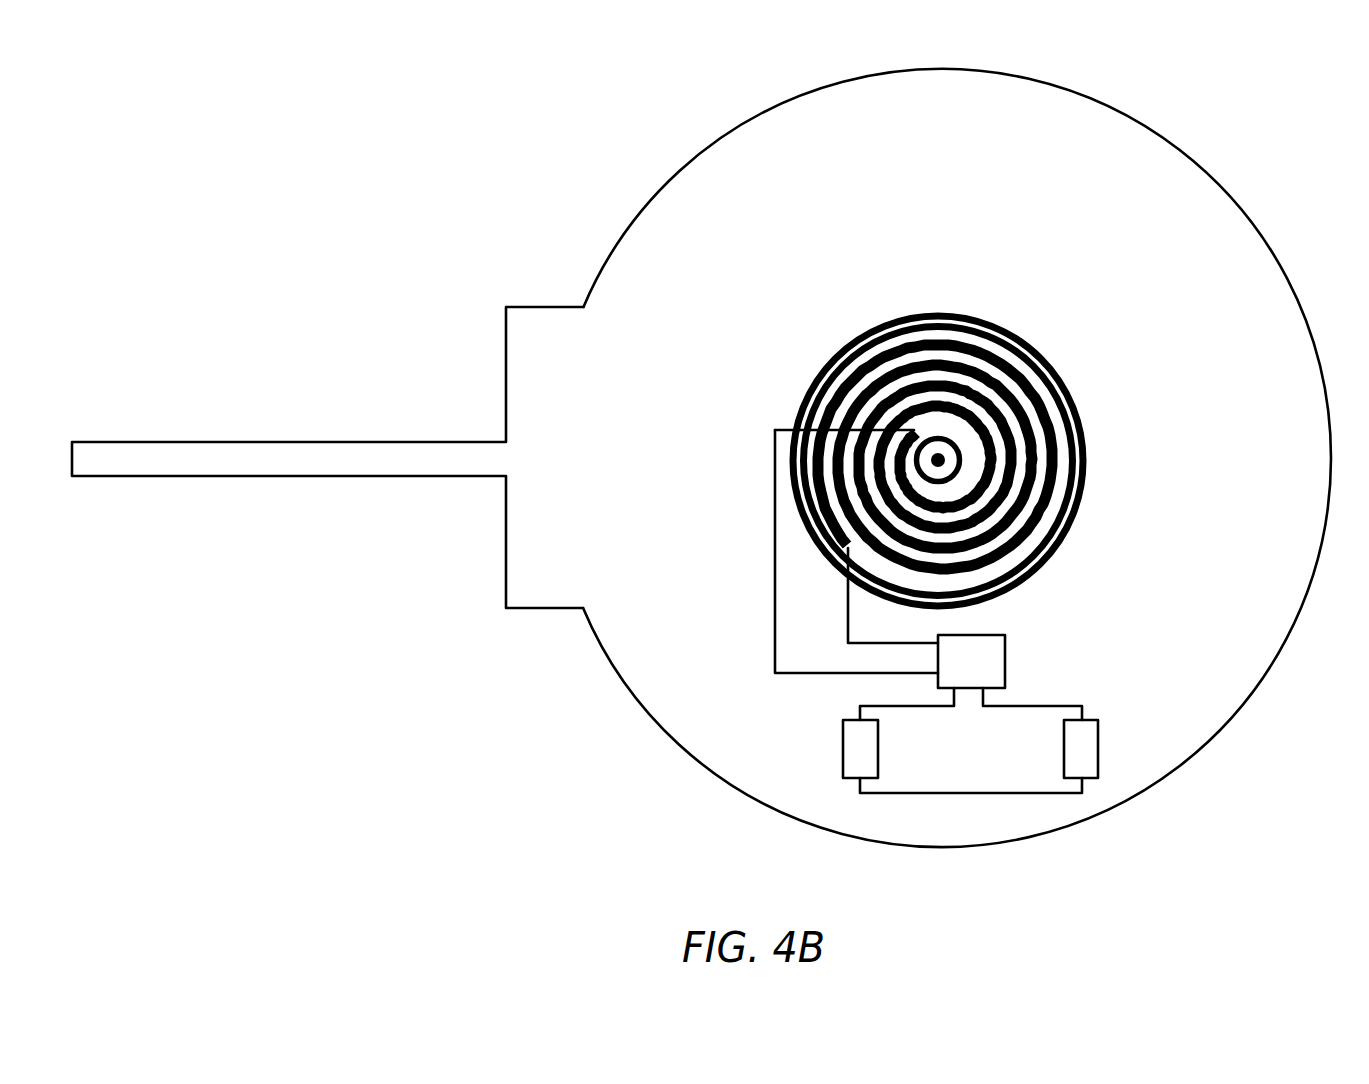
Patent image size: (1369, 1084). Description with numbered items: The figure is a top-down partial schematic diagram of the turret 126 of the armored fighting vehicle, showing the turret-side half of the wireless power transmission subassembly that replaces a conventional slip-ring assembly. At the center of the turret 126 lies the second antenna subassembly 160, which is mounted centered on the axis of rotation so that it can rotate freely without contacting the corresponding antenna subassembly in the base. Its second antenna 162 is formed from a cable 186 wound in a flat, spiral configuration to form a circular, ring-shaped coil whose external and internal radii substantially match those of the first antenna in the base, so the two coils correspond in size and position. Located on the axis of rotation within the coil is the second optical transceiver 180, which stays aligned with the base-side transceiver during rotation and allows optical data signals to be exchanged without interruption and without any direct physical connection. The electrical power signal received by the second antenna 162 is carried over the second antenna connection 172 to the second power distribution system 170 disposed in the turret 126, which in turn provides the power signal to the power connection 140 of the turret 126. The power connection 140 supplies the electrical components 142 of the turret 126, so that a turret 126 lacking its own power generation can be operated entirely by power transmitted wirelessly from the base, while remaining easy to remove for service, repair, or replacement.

The turret 126 is at (632, 92).
The second antenna subassembly 160 is at (815, 372).
The second antenna 162 is at (1038, 390).
The cable 186 is at (984, 343).
The second optical transceiver 180 is at (946, 457).
The second antenna connection 172 is at (775, 618).
The second power distribution system 170 is at (1005, 672).
The power connection 140 is at (885, 795).
The electrical component 142 is at (843, 744).